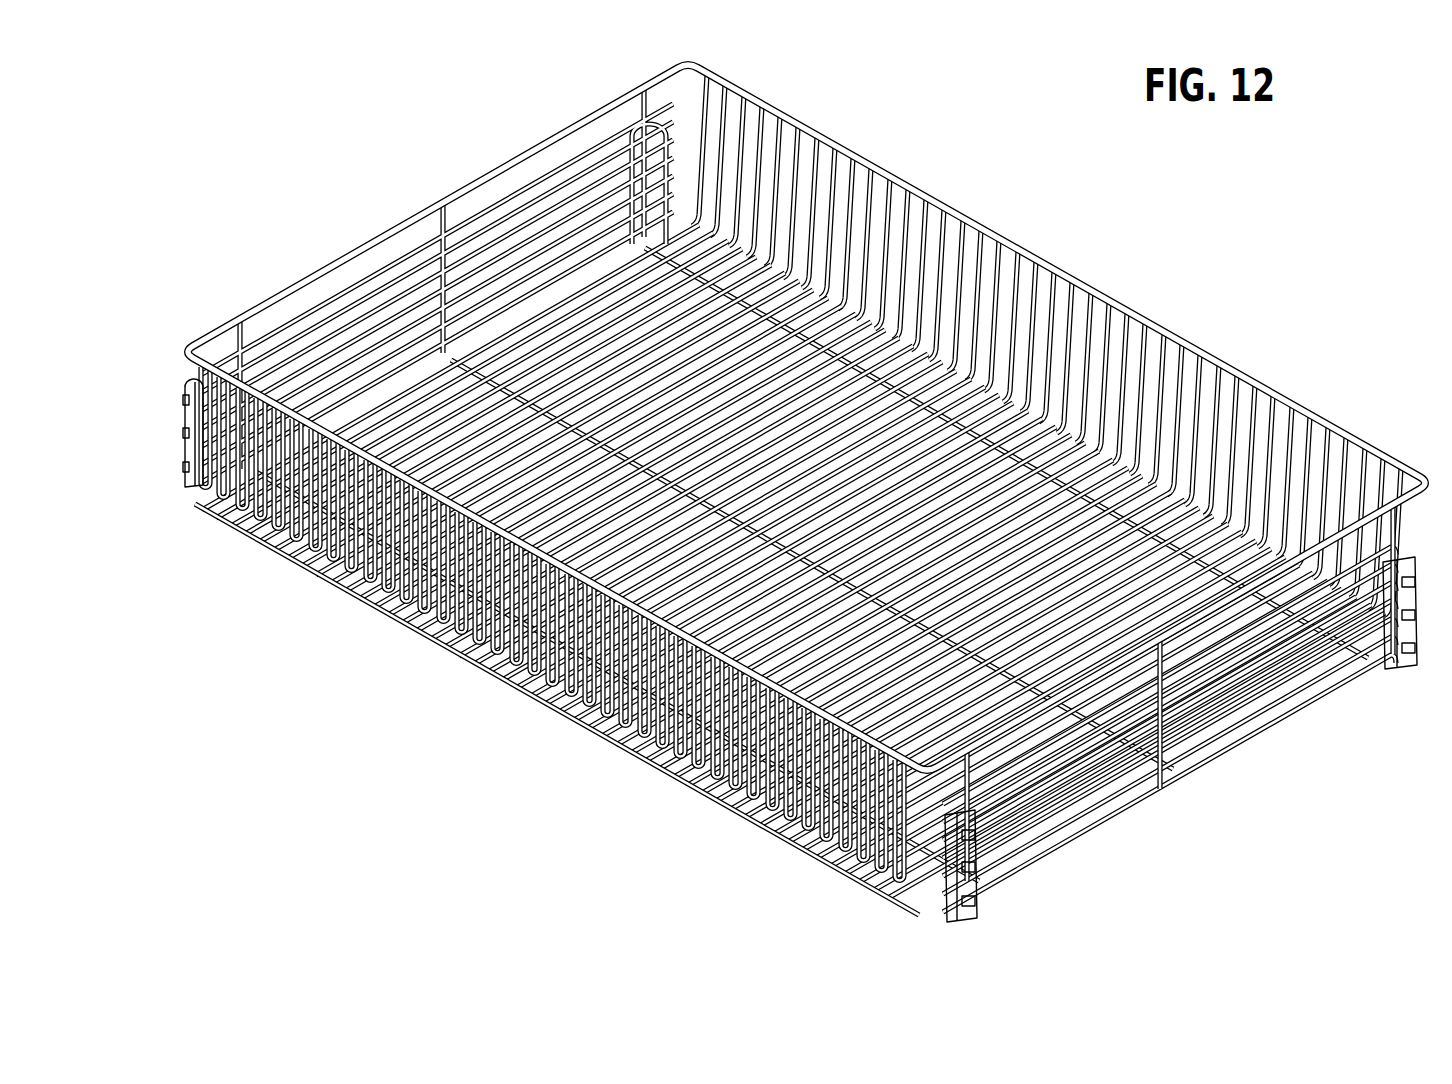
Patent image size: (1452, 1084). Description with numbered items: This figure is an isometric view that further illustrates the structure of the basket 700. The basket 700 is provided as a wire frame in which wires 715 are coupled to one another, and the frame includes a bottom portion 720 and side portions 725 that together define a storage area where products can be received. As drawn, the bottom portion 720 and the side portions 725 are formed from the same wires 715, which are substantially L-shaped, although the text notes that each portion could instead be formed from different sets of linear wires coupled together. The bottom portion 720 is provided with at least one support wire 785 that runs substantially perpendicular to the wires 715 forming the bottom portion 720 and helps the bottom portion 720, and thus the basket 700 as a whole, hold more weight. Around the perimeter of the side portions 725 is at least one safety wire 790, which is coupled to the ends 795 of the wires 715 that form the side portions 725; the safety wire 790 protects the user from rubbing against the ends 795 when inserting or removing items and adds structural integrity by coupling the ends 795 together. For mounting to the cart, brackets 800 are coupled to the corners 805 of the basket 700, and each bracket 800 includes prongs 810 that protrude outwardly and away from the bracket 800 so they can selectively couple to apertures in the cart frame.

The basket 700 is at (1280, 336).
The wires 715 is at (270, 522).
The bottom portion 720 is at (471, 625).
The side portion 725 is at (864, 134).
The support wire 785 is at (630, 313).
The safety wire 790 is at (1323, 414).
The ends 795 is at (1003, 250).
The bracket 800 is at (1005, 881).
The corner 805 is at (181, 494).
The prong 810 is at (974, 878).